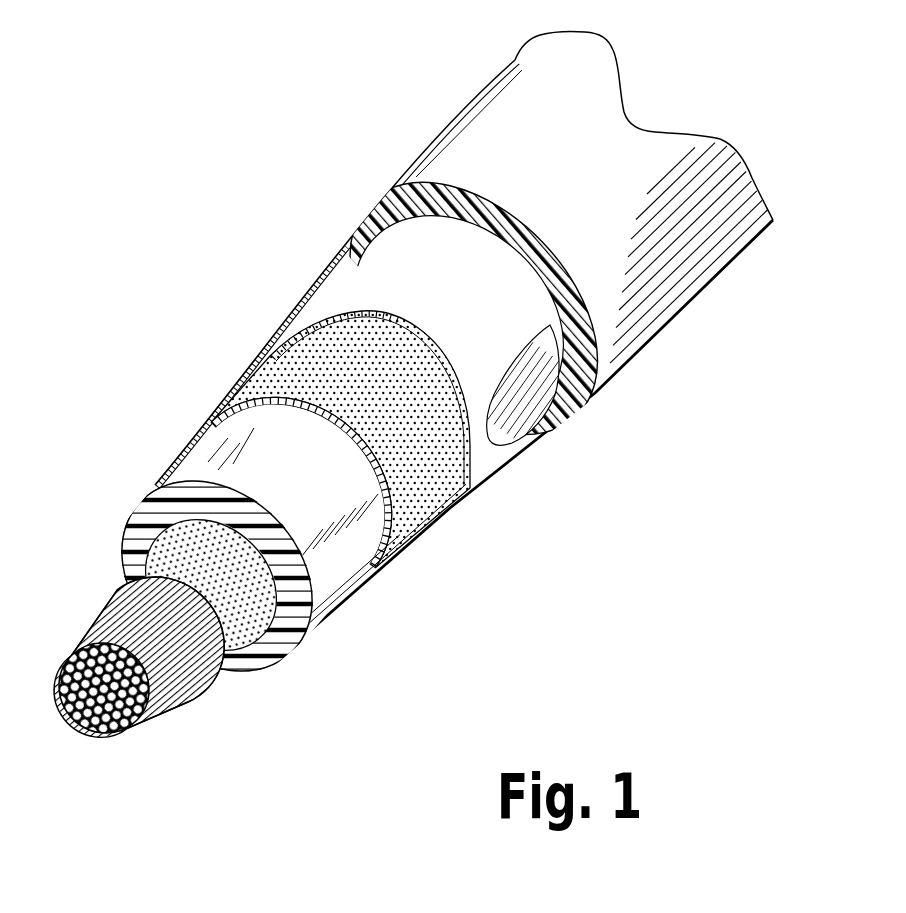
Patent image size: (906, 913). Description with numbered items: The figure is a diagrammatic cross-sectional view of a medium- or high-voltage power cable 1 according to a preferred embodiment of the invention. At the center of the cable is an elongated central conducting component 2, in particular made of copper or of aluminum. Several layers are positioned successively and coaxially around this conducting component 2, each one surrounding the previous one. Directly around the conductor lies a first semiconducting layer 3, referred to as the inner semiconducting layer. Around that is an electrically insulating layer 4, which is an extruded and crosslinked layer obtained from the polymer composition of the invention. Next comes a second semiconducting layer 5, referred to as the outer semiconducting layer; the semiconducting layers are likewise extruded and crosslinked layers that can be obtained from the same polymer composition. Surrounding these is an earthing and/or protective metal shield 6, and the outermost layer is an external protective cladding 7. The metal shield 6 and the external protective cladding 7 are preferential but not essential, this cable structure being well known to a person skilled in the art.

The power cable 1 is at (406, 414).
The elongated central conducting component 2 is at (190, 690).
The first semiconducting layer 3 is at (278, 658).
The electrically insulating layer 4 is at (318, 547).
The second semiconducting layer 5 is at (423, 453).
The metal shield 6 is at (513, 443).
The external protective cladding 7 is at (607, 270).